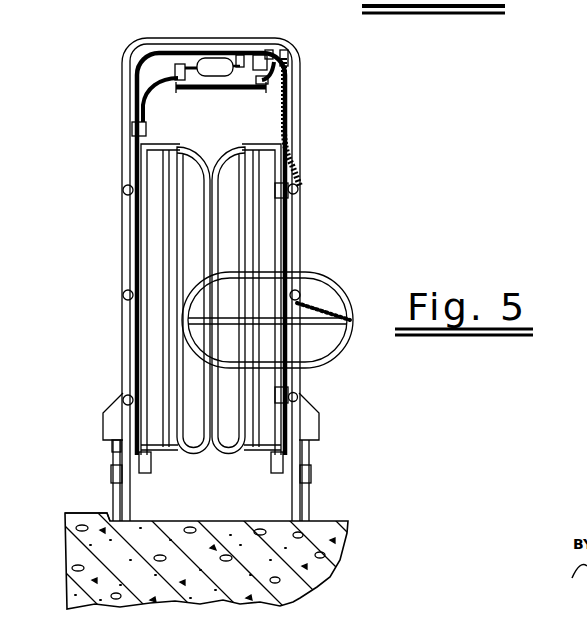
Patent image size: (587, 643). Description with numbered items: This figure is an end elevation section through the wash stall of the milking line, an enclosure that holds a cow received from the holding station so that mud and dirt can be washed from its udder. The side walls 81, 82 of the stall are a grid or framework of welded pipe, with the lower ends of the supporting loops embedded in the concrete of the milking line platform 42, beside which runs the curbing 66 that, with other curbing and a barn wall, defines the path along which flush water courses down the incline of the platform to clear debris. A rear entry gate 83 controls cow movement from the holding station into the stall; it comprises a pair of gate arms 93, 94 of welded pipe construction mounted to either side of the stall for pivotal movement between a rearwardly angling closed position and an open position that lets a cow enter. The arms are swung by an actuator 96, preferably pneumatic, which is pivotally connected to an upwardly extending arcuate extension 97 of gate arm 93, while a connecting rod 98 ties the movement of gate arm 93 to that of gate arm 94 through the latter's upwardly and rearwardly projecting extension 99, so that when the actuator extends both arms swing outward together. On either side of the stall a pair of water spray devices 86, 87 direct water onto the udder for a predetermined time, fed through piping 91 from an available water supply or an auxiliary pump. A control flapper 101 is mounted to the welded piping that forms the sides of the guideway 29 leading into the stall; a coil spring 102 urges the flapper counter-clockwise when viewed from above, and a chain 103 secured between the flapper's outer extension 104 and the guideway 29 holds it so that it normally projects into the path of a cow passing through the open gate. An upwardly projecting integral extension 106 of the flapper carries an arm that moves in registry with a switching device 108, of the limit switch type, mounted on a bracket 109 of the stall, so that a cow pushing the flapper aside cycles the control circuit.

The guideway 29 is at (298, 200).
The milking line platform 42 is at (220, 520).
The curbing 66 is at (83, 510).
The side wall 81 is at (125, 118).
The side wall 82 is at (301, 107).
The rear entry gate 83 is at (188, 138).
The water spray device 86 is at (100, 415).
The water spray device 87 is at (327, 412).
The piping 91 is at (117, 458).
The gate arm 93 is at (203, 440).
The gate arm 94 is at (230, 440).
The actuator 96 is at (217, 57).
The arcuate extension 97 is at (153, 45).
The connecting rod 98 is at (218, 91).
The extension 99 is at (270, 83).
The control flapper 101 is at (200, 280).
The coil spring 102 is at (305, 170).
The chain 103 is at (324, 307).
The outer extension 104 is at (334, 286).
The integral extension 106 is at (290, 54).
The switching device 108 is at (257, 54).
The bracket 109 is at (269, 52).